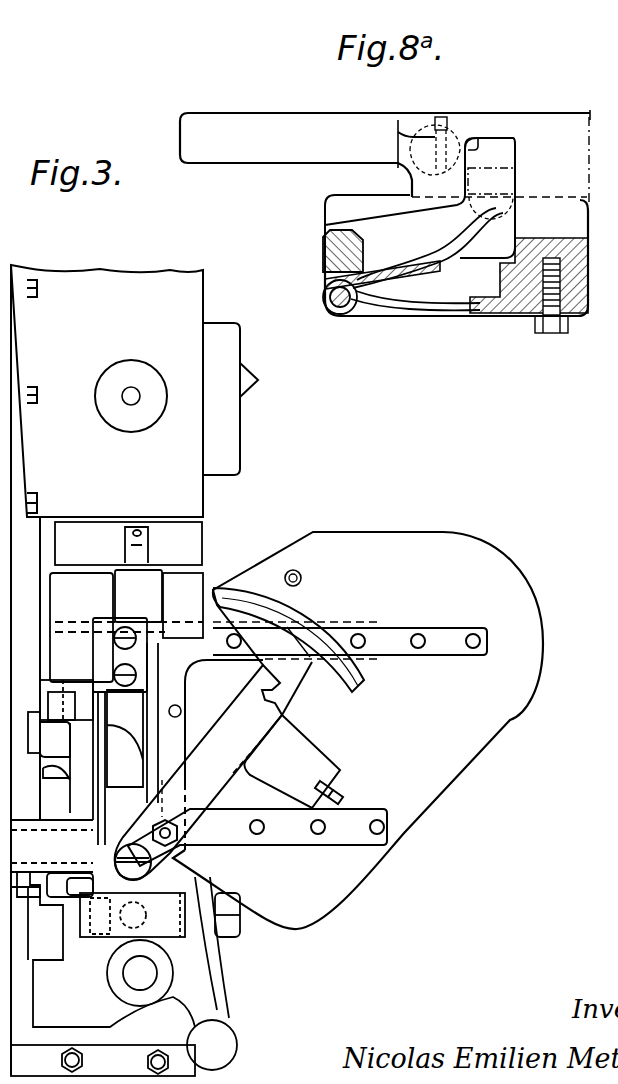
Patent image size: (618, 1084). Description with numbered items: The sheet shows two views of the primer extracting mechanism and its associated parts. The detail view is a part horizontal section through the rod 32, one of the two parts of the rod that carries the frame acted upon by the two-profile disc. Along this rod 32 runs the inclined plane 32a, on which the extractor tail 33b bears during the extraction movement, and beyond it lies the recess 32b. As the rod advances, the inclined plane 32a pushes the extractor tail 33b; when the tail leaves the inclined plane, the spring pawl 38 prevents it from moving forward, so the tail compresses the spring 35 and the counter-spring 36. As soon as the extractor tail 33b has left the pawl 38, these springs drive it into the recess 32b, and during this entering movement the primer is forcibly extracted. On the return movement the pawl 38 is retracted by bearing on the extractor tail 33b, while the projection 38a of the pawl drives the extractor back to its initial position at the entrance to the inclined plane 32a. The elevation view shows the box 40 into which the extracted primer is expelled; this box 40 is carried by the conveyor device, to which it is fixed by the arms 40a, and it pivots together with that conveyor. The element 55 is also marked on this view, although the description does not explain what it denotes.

In FIG. 3, the circular boss 55 is at (128, 420).
In FIG. 3, the box 40 is at (430, 543).
In FIG. 3, the arms 40a is at (390, 634).
In FIG. 8A, the rod 32 is at (292, 153).
In FIG. 8A, the inclined plane 32a is at (396, 271).
In FIG. 8A, the recess 32b is at (496, 152).
In FIG. 8A, the extractor tail 33b is at (517, 172).
In FIG. 8A, the spring 35 is at (360, 292).
In FIG. 8A, the counter-spring 36 is at (478, 308).
In FIG. 8A, the pawl 38 is at (433, 204).
In FIG. 8A, the projection 38a is at (468, 142).